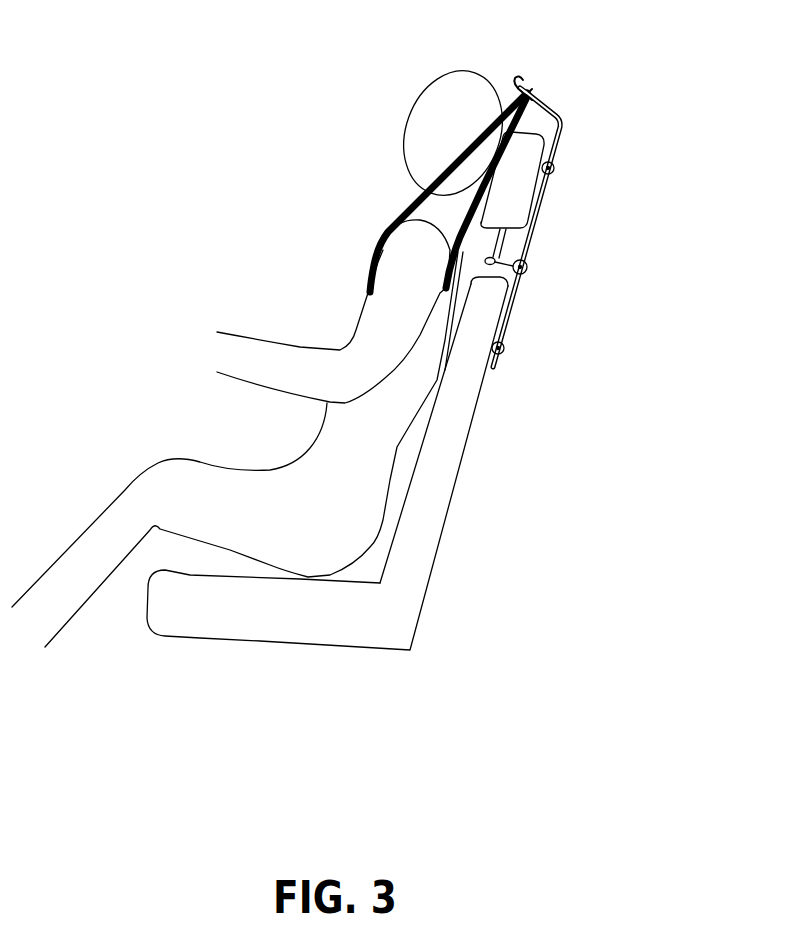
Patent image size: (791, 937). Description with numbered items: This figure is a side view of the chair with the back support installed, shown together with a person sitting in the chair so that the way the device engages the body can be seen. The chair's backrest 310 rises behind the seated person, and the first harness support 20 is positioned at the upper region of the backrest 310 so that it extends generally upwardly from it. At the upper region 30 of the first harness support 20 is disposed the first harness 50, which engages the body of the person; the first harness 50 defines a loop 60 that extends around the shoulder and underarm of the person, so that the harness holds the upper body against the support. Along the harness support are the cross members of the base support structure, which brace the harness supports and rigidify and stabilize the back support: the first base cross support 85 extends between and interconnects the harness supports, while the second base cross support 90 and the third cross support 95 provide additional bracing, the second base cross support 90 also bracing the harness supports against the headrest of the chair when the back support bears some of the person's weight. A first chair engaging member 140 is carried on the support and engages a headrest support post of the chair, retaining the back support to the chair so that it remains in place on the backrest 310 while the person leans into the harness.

The first harness support 20 is at (557, 133).
The upper region of first harness support 30 is at (542, 102).
The first harness 50 is at (507, 112).
The loop 60 is at (386, 233).
The first base cross support 85 is at (527, 270).
The second base cross support 90 is at (556, 172).
The third cross support 95 is at (504, 350).
The first chair engaging member 140 is at (495, 258).
The backrest 310 is at (430, 495).